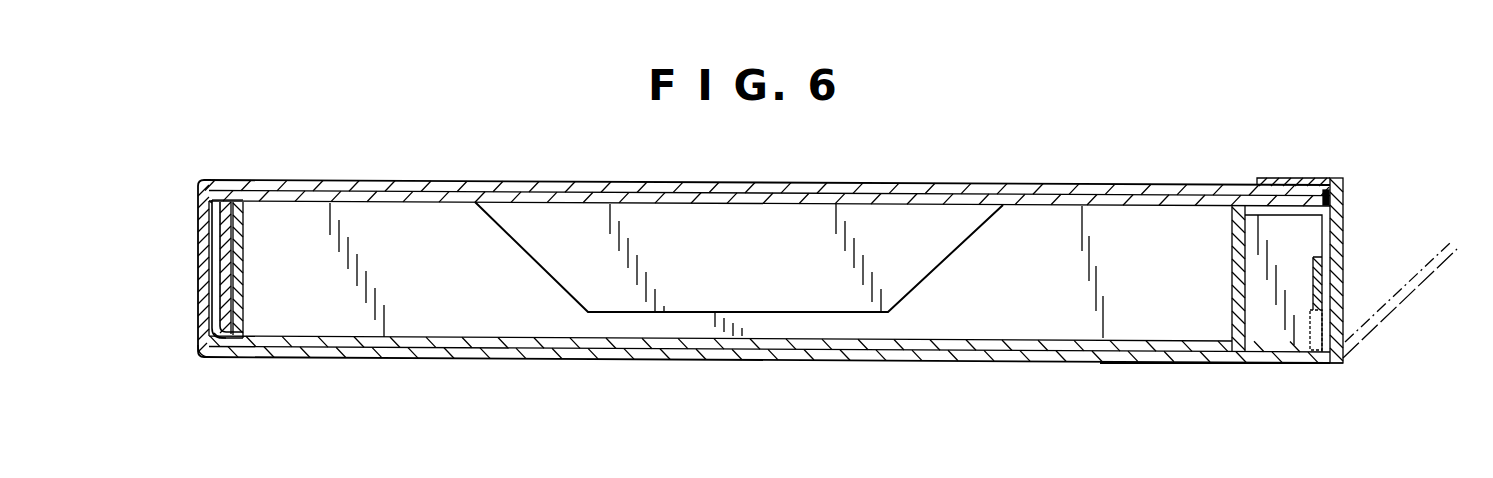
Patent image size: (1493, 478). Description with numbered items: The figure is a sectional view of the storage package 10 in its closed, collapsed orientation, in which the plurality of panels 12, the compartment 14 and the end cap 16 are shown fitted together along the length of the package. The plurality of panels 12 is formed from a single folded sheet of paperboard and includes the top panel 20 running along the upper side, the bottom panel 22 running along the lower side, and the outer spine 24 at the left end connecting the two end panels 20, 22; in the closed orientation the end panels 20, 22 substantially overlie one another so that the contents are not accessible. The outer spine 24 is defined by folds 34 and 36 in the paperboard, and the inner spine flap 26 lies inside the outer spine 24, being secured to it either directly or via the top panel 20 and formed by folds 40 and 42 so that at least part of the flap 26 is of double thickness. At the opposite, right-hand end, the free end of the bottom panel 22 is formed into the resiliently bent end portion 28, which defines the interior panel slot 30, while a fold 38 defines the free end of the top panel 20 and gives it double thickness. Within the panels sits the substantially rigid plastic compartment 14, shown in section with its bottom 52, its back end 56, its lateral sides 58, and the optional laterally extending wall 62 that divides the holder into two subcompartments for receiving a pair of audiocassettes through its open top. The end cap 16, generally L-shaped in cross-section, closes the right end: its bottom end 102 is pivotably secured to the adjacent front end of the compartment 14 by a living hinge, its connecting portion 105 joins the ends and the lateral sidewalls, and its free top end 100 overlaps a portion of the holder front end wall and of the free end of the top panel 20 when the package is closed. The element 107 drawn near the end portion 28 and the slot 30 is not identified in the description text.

The display assembly 10 is at (543, 138).
The housing 12 is at (1153, 183).
The end liner 14 is at (248, 247).
The joint 16 is at (1317, 172).
The top wall 20 is at (828, 185).
The bottom wall 22 is at (999, 358).
The side wall 24 is at (200, 317).
The channel 26 is at (218, 205).
The strip 28 is at (1313, 262).
The end compartment 30 is at (1342, 265).
The corner 34 is at (203, 347).
The flange 36 is at (216, 193).
The end plate 38 is at (1334, 180).
The flange 40 is at (213, 203).
The bend 42 is at (223, 343).
The bottom plate 52 is at (1170, 352).
The liner plate 56 is at (245, 298).
The cavity 58 is at (528, 323).
The reflector 62 is at (1046, 210).
The cover plate 100 is at (1285, 178).
The corner 102 is at (1343, 361).
The hinged cover 105 is at (1343, 207).
The latch 107 is at (1310, 310).